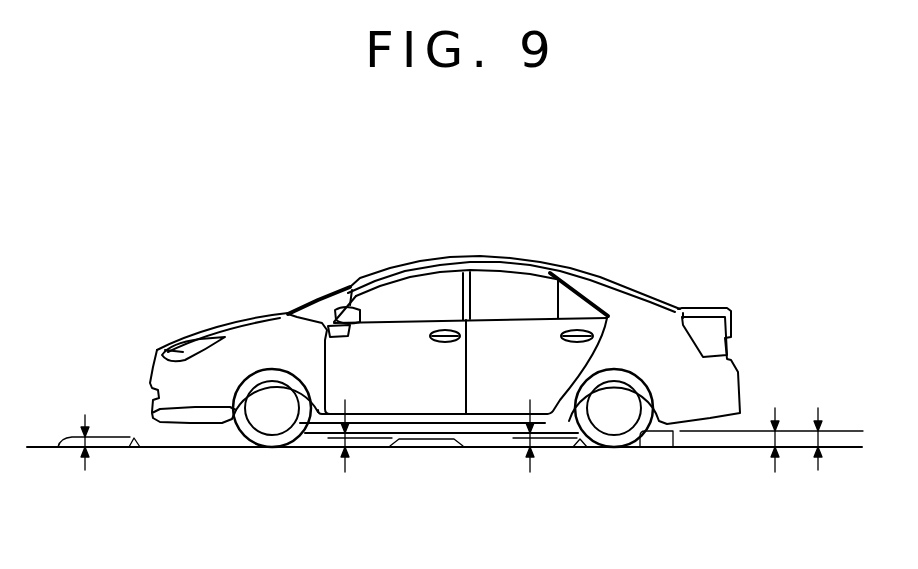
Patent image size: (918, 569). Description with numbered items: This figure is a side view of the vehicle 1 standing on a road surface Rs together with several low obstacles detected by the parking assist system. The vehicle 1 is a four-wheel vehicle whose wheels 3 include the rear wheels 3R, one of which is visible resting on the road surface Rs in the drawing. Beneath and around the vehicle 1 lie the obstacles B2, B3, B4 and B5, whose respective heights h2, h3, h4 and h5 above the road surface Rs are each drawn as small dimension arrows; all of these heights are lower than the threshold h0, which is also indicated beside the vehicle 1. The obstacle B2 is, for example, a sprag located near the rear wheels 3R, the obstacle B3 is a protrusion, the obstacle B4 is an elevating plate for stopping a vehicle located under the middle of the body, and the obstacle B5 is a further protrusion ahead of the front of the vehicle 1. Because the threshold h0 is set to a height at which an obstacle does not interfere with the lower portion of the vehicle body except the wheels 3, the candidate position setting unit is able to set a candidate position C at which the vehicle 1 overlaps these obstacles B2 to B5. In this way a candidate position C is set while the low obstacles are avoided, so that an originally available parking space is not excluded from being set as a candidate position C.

The vehicle 1 is at (445, 374).
The candidate position C is at (545, 259).
The wheels 3 is at (617, 456).
The rear wheels 3R is at (613, 448).
The road surface Rs is at (56, 444).
The height h5 is at (64, 452).
The obstacle B5 is at (134, 450).
The height h4 is at (324, 450).
The obstacle B4 is at (425, 448).
The height h3 is at (522, 447).
The obstacle B3 is at (579, 449).
The obstacle B2 is at (655, 440).
The height h2 is at (773, 438).
The threshold h0 is at (816, 447).